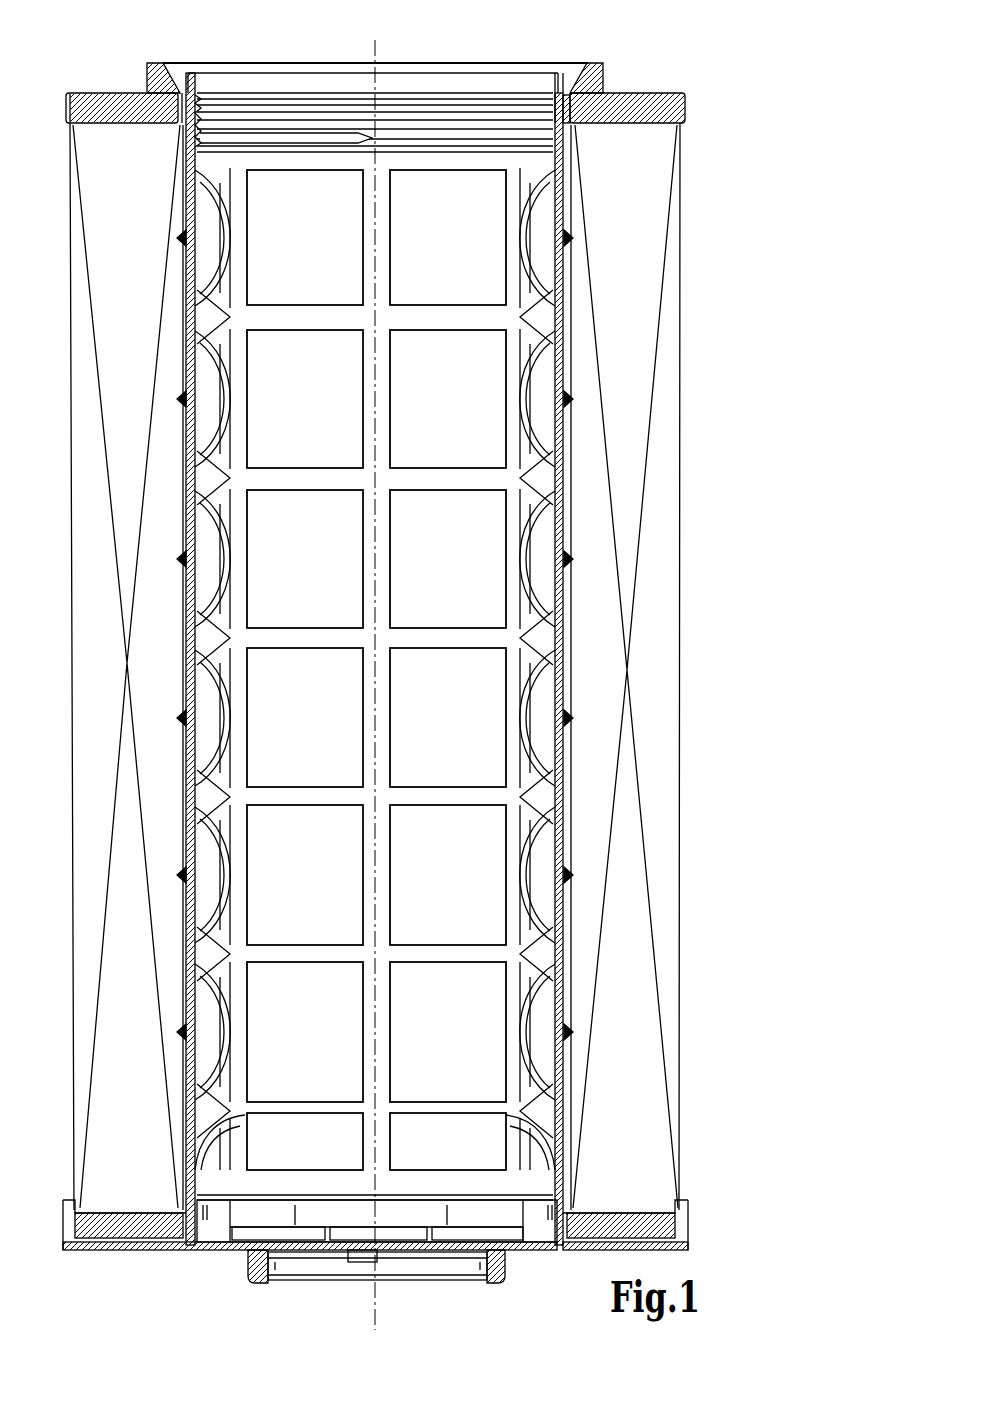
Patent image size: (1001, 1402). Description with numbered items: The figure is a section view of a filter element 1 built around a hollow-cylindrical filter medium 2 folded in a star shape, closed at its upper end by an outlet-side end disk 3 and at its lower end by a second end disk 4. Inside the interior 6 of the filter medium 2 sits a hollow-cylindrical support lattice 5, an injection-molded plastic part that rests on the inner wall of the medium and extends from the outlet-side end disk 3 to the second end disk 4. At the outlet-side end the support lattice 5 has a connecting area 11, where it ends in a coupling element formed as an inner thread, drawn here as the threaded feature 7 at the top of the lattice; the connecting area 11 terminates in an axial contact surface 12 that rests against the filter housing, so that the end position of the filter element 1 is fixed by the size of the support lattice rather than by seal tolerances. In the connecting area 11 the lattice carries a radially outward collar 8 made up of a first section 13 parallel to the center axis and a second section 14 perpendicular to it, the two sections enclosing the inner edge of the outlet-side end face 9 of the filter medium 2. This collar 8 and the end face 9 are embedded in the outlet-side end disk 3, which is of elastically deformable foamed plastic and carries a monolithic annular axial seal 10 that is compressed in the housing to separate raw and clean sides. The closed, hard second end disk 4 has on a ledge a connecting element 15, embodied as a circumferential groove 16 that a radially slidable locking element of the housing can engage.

The filter element 1 is at (700, 123).
The filter medium 2 is at (690, 328).
The outlet-side end disk 3 is at (95, 95).
The second end disk 4 is at (112, 1250).
The support lattice 5 is at (541, 345).
The interior 6 is at (262, 1153).
The grooves 7 is at (207, 94).
The collar 8 is at (176, 98).
The outlet-side end face 9 is at (130, 95).
The axial seal 10 is at (607, 57).
The connecting area 11 is at (483, 85).
The axial contact surface 12 is at (537, 72).
The first section 13 is at (580, 112).
The second section 14 is at (600, 89).
The connecting element 15 is at (500, 1274).
The groove 16 is at (512, 1263).